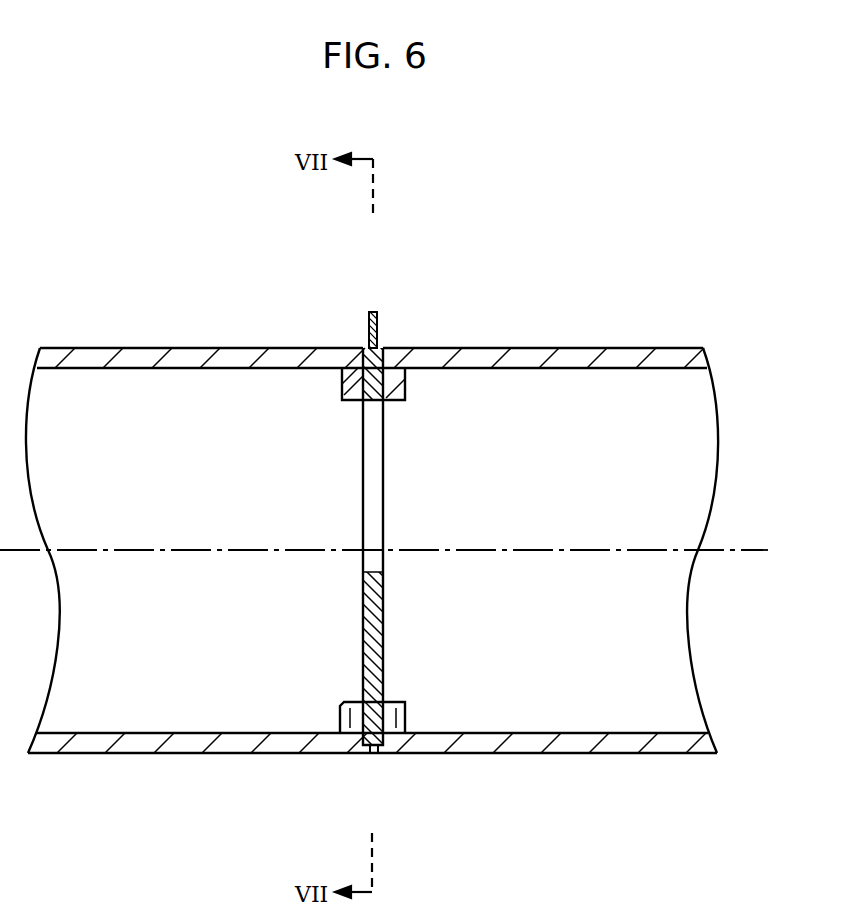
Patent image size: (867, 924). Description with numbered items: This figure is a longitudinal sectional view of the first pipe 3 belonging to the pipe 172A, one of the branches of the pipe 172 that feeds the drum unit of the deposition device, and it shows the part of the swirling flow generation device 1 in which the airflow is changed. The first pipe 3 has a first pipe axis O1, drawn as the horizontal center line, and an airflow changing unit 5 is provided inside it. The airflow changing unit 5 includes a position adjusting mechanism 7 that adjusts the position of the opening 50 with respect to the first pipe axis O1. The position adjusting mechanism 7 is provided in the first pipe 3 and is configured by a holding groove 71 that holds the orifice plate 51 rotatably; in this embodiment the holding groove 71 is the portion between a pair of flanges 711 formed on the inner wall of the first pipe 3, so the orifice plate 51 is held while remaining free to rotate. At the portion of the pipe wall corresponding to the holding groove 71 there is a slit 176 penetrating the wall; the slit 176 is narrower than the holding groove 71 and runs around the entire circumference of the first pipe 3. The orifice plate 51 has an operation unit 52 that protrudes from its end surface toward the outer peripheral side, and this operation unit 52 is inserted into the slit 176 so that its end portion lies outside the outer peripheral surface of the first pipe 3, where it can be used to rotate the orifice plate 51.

The swirling flow generation device 1 is at (496, 222).
The first pipe 3 is at (531, 324).
The pipe 172 is at (380, 509).
The pipe 172A is at (588, 346).
The airflow changing unit 5 is at (341, 289).
The opening 50 is at (366, 444).
The orifice plate 51 is at (367, 657).
The operation unit 52 is at (374, 311).
The position adjusting mechanism 7 is at (412, 388).
The holding groove 71 is at (342, 387).
The slit 176 is at (392, 704).
The flanges 711 is at (398, 723).
The first pipe axis O1 is at (673, 550).